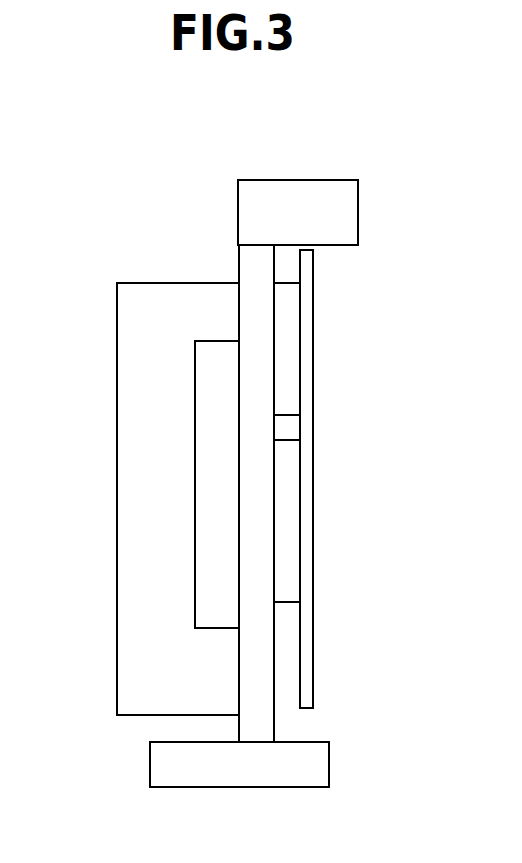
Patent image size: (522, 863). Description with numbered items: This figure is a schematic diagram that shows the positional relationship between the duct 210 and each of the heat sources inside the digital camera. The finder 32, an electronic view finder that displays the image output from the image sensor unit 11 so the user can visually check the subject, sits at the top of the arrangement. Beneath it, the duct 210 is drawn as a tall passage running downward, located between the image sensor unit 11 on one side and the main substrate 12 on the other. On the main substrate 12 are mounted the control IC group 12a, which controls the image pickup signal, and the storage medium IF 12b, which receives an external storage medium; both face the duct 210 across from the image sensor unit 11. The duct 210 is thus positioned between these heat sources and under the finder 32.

The finder 32 is at (297, 192).
The duct 210 is at (248, 311).
The image sensor unit 11 is at (207, 390).
The main substrate 12 is at (313, 376).
The storage medium IF 12b is at (290, 320).
The control integrated circuit (IC) group 12a is at (290, 503).